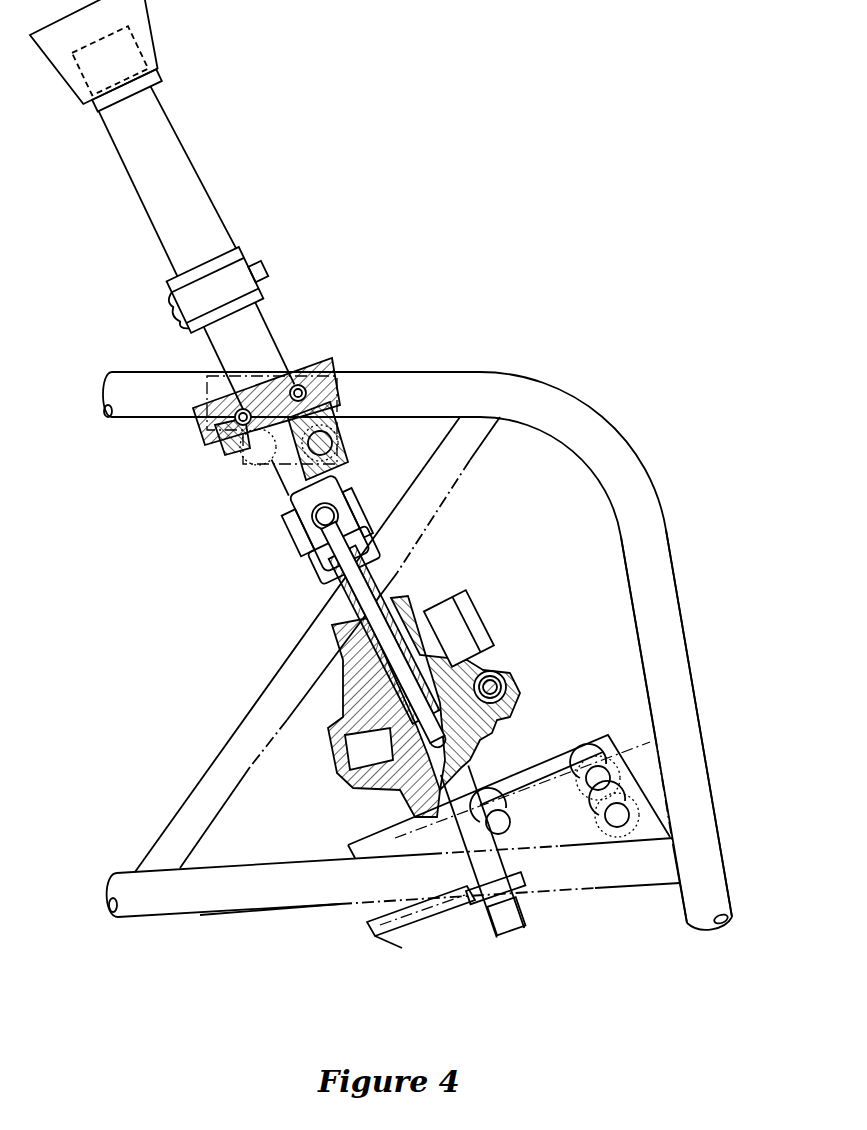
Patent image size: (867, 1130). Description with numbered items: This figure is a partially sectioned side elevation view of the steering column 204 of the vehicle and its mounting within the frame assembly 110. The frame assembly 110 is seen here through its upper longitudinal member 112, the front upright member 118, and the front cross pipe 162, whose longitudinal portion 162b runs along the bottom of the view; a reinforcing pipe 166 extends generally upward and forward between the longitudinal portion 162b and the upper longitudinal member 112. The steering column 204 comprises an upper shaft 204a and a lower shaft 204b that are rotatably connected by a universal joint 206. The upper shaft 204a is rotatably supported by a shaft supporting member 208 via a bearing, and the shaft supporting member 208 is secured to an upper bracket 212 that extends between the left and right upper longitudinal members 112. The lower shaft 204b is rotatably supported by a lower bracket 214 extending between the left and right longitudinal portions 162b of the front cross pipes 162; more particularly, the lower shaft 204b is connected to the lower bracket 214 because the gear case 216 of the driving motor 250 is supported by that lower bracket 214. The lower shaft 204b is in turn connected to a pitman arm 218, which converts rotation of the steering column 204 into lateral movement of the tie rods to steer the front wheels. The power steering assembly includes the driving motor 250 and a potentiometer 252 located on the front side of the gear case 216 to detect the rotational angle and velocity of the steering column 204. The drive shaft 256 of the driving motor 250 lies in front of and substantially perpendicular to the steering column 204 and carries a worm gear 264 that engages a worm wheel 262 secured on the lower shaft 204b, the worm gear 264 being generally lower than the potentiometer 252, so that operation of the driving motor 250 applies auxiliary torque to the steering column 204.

The frame assembly 110 is at (623, 400).
The upper longitudinal member 112 is at (431, 367).
The front upright member 118 is at (685, 598).
The front cross pipe 162 is at (220, 918).
The longitudinal portion 162b is at (257, 913).
The reinforcing pipe 166 is at (178, 803).
The steering column 204 is at (223, 192).
The upper shaft 204a is at (268, 320).
The lower shaft 204b is at (378, 588).
The universal joint 206 is at (293, 546).
The shaft supporting member 208 is at (324, 352).
The upper bracket 212 is at (341, 404).
The lower bracket 214 is at (612, 738).
The gear case 216 is at (343, 688).
The pitman arm 218 is at (388, 934).
The driving motor 250 is at (439, 694).
The potentiometer 252 is at (481, 623).
The drive shaft 256 is at (504, 671).
The worm wheel 262 is at (498, 738).
The worm gear 264 is at (466, 708).